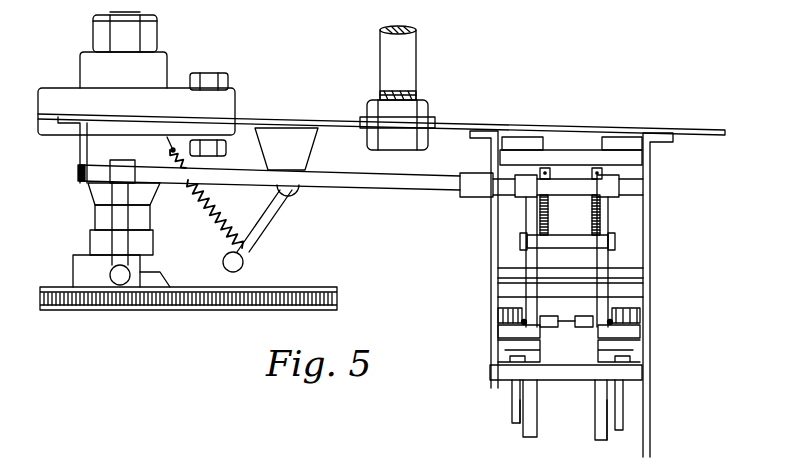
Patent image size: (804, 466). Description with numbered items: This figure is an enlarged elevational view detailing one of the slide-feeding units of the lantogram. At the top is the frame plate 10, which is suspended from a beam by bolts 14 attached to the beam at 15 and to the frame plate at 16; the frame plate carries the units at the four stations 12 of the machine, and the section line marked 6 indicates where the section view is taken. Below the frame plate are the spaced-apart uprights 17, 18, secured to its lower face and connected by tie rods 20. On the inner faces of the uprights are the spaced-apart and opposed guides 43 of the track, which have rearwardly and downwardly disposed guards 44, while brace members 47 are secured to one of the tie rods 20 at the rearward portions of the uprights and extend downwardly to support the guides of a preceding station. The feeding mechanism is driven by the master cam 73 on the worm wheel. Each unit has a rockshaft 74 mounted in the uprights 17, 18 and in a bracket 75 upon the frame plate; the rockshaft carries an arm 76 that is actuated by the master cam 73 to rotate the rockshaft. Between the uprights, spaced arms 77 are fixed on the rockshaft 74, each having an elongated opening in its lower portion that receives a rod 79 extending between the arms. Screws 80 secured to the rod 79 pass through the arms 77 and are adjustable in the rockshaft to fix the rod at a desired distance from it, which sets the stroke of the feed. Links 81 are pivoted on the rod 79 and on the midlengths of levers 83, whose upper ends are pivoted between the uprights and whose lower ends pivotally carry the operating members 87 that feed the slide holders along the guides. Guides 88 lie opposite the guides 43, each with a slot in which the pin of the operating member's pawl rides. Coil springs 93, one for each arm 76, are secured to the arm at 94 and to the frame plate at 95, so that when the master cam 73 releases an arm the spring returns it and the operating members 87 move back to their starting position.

The section line 6- 6 is at (168, 142).
The frame plate 10 is at (570, 128).
The stations 12 is at (290, 292).
The bolts 14 is at (407, 62).
The attachment point to beam 15 is at (296, 143).
The attachment point to frame plate 16 is at (120, 220).
The upright 17 is at (648, 256).
The upright 18 is at (498, 249).
The tie rods 20 is at (632, 158).
The guides 43 is at (507, 351).
The guards 44 is at (530, 415).
The brace members 47 is at (515, 430).
The master cam 73 is at (78, 260).
The rockshaft 74 is at (420, 184).
The bracket 75 is at (80, 157).
The arm 76 is at (274, 212).
The spaced arms 77 is at (531, 223).
The rod 79 is at (590, 247).
The screws 80 is at (591, 215).
The links 81 is at (520, 236).
The levers 83 is at (533, 295).
The operating member 87 is at (545, 327).
The guides 88 is at (507, 326).
The coil springs 93 is at (217, 226).
The spring attachment to arm 94 is at (246, 248).
The spring attachment to frame plate 95 is at (172, 152).